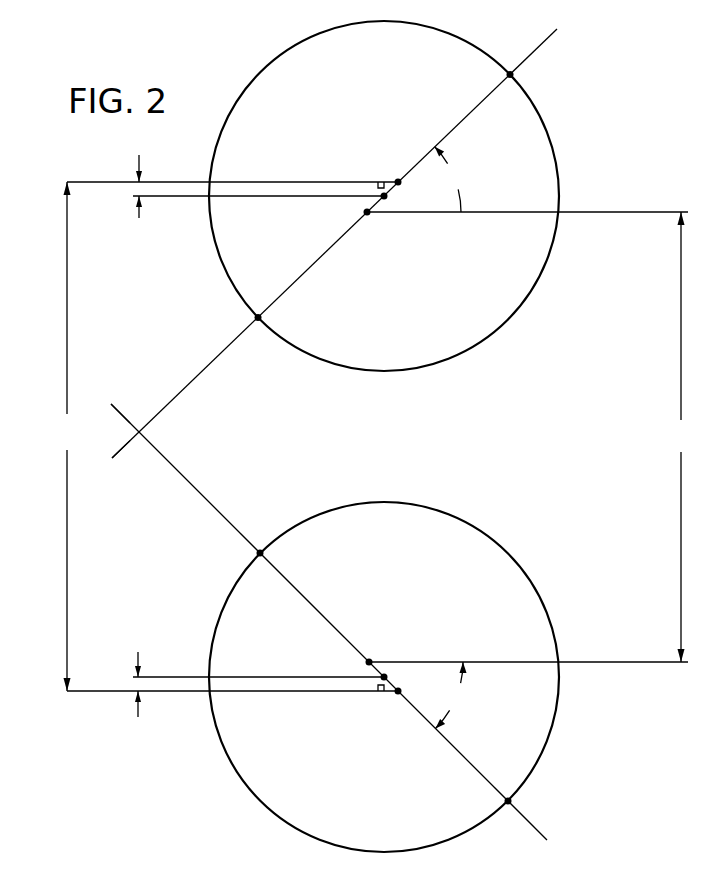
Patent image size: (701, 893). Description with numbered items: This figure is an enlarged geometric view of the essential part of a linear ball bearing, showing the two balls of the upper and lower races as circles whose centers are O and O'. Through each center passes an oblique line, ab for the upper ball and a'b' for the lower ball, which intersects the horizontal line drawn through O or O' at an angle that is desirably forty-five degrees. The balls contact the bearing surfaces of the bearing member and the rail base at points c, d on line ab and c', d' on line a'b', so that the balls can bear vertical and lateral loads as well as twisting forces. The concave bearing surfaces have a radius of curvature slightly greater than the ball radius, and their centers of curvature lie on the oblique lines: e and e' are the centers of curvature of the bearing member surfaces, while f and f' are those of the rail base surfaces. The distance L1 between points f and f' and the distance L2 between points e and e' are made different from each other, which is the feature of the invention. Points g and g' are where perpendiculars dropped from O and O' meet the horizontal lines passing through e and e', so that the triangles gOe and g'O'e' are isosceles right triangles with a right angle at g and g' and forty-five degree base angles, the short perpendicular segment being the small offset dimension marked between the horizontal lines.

The center of ball O is at (384, 196).
The center of ball O' is at (384, 677).
The end point of oblique line a is at (113, 456).
The end point of oblique line b is at (343, 238).
The end point of oblique line a' is at (112, 408).
The end point of oblique line b' is at (342, 628).
The contact point c is at (239, 317).
The contact point d is at (526, 74).
The contact point c' is at (238, 552).
The contact point d' is at (526, 801).
The center of curvature e is at (236, 166).
The center of curvature f is at (526, 228).
The point of intersection g is at (258, 171).
The center of curvature e' is at (236, 708).
The center of curvature f' is at (527, 646).
The point of intersection g' is at (258, 702).
The distance between points f and f' L1 is at (679, 437).
The distance between points e and e' L2 is at (64, 436).